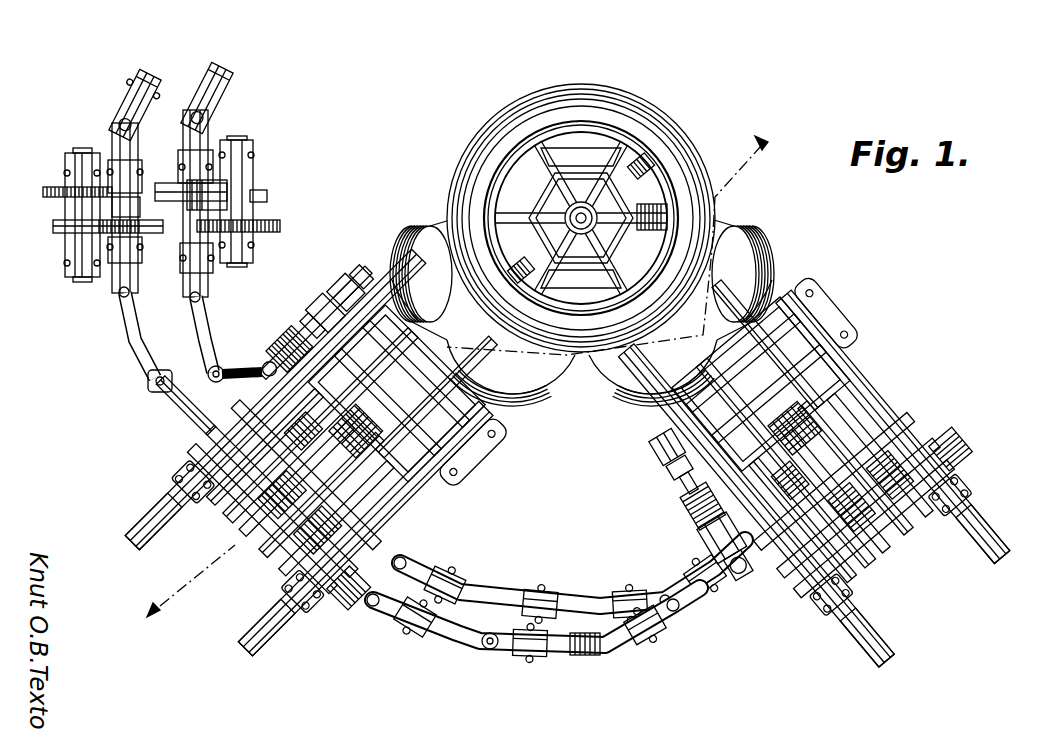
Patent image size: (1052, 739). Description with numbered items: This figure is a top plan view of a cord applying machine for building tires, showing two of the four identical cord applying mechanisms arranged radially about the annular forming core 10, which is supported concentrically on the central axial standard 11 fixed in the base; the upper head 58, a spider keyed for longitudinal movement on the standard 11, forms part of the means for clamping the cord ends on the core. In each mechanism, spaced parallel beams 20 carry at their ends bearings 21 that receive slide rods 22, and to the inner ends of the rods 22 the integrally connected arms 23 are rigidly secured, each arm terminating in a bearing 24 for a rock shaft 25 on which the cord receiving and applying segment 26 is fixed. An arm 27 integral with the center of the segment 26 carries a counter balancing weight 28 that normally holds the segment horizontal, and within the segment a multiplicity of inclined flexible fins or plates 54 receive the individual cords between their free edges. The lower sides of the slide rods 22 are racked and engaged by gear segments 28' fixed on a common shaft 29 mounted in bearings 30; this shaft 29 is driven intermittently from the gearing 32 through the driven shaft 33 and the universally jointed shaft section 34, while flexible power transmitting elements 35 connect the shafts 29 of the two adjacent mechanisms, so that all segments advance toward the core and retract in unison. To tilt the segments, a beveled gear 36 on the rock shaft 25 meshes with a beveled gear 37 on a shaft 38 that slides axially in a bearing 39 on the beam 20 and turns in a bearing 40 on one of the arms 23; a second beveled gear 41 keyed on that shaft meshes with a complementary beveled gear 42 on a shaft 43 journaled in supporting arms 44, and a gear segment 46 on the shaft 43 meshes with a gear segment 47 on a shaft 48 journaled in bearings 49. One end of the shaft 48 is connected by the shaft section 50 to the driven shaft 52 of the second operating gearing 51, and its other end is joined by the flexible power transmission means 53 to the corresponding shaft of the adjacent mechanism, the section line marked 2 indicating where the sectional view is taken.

The annular forming core 10 is at (542, 102).
The central axial standard 11 is at (575, 212).
The upper head 58 is at (607, 200).
The fins or plates 54 is at (418, 250).
The cord receiving and applying segment 26 is at (765, 268).
The bearing 24 is at (400, 275).
The arms 23 is at (325, 290).
The bearing 21 is at (186, 480).
The slide rods 22 is at (140, 522).
The beams 20 is at (240, 520).
The rock shaft 25 is at (355, 375).
The arm 27 is at (398, 400).
The counter balancing weight 28 is at (591, 514).
The gear segments 28' is at (529, 526).
The shaft 29 is at (320, 460).
The bearings 30 is at (230, 500).
The beveled gear 36 is at (372, 305).
The beveled gear 37 is at (355, 300).
The shaft 38 is at (262, 360).
The bearing 39 is at (295, 335).
The bearing 40 is at (318, 315).
The second beveled gear 41 is at (285, 325).
The universal joint 42 is at (172, 384).
The shaft 43 is at (345, 490).
The supporting arms 44 is at (168, 402).
The gear segment 46 is at (285, 520).
The gear segment 47 is at (270, 510).
The shaft 48 is at (290, 550).
The bearings 49 is at (195, 430).
The shaft section 50 is at (122, 330).
The second operating gearing 51 is at (118, 145).
The driven shaft 52 is at (110, 288).
The flexible power transmission means 53 is at (500, 650).
The gearing 32 is at (255, 195).
The driven shaft 33 is at (190, 250).
The shaft section 34 is at (260, 330).
The flexible power transmitting elements 35 is at (540, 598).
The section line 2 is at (459, 389).